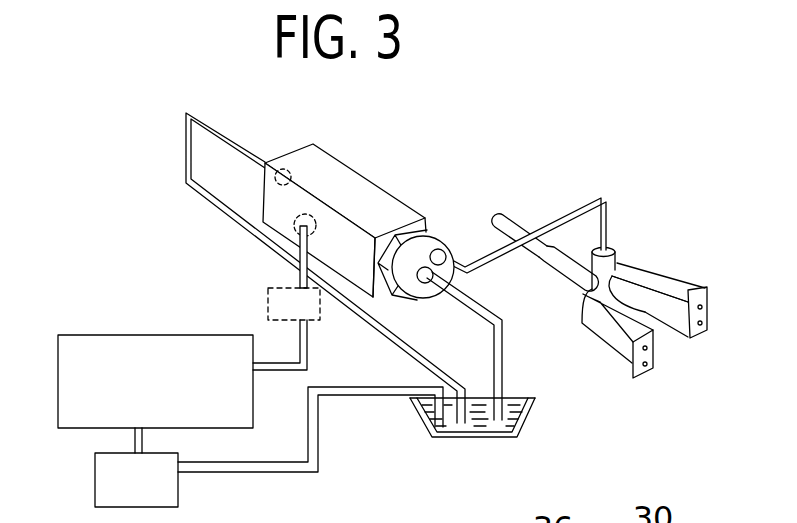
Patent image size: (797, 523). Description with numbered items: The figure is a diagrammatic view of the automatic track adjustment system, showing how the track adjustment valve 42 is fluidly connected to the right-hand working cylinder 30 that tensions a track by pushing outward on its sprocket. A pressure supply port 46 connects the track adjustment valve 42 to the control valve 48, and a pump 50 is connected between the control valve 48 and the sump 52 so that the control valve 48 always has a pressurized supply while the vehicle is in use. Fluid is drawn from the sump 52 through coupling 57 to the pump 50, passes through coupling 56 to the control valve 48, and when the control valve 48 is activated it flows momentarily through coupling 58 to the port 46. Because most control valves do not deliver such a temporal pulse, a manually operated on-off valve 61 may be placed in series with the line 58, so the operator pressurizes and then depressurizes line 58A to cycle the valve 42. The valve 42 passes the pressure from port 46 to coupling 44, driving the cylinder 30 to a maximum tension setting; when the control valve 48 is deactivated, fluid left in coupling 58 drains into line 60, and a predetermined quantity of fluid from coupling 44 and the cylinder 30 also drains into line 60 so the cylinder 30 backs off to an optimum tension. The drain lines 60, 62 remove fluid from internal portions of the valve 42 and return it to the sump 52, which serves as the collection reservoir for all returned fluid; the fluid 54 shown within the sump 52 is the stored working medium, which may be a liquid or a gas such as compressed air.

The right-hand working cylinder 30 is at (563, 290).
The track adjustment valve 42 is at (368, 148).
The coupling 44 is at (571, 210).
The pressure supply port 46 is at (322, 241).
The control valve 48 is at (163, 335).
The pump 50 is at (147, 507).
The sump 52 is at (481, 438).
The liquid 54 is at (507, 400).
The coupling 56 is at (132, 440).
The coupling 57 is at (318, 439).
The coupling 58 is at (310, 348).
The line 58A is at (300, 247).
The drain line 60 is at (208, 200).
The manually operated on-off valve 61 is at (268, 292).
The drain line 62 is at (503, 347).